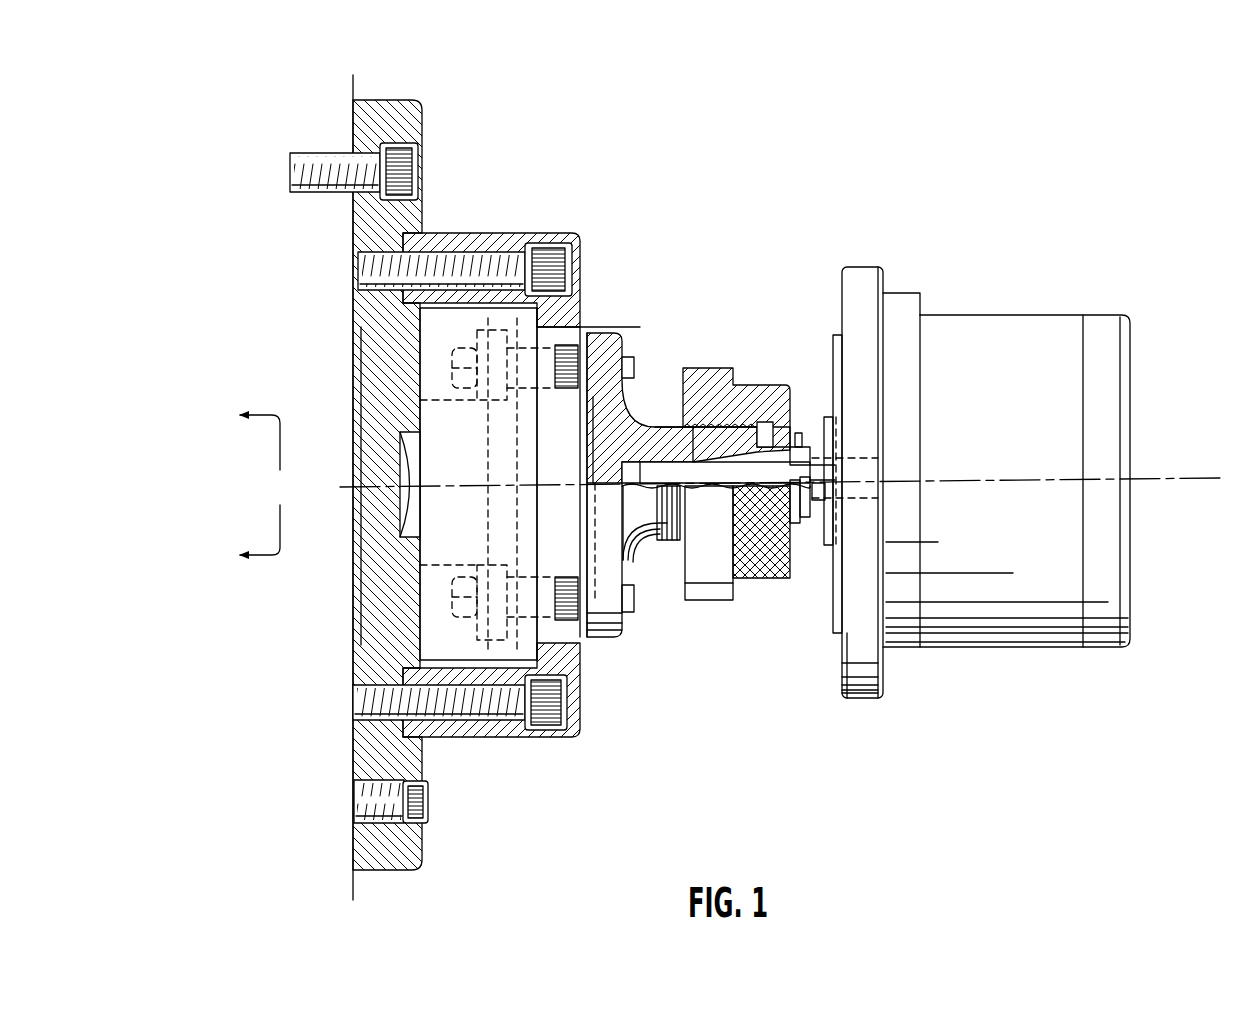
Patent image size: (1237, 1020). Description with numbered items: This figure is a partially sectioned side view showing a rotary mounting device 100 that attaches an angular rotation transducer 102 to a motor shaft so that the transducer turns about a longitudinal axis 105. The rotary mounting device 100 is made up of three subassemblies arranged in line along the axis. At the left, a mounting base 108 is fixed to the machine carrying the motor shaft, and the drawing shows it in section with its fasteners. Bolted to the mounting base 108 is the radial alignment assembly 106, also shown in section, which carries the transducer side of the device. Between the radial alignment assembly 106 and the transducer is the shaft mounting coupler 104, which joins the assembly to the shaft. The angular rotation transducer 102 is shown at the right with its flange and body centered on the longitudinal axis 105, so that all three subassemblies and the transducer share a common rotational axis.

The rotary mounting device 100 is at (786, 180).
The angular rotation transducer 102 is at (1010, 310).
The shaft mounting coupler 104 is at (716, 358).
The longitudinal axis 105 is at (1183, 478).
The radial alignment assembly 106 is at (490, 230).
The mounting base 108 is at (432, 130).